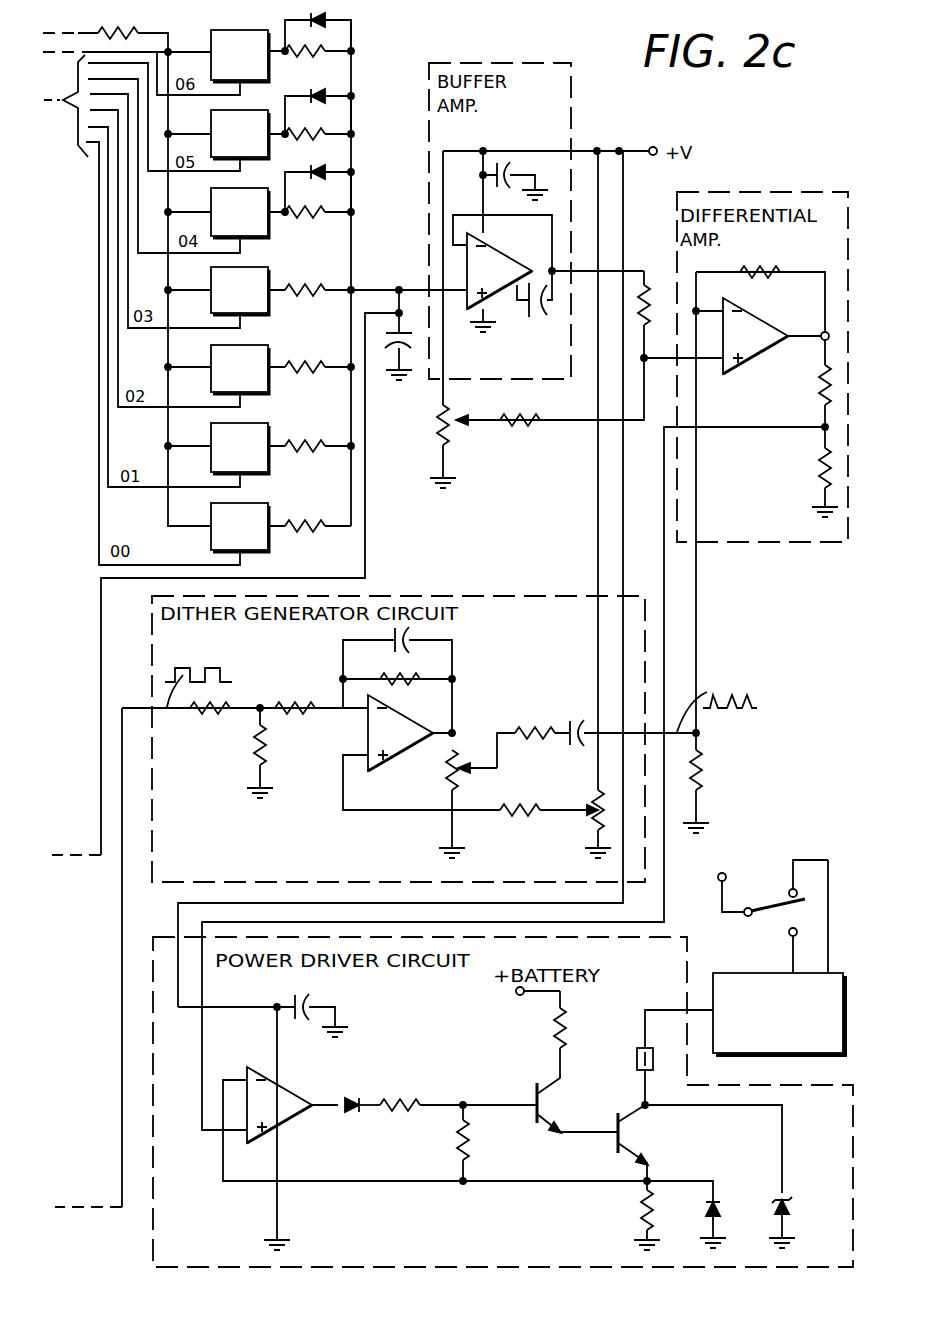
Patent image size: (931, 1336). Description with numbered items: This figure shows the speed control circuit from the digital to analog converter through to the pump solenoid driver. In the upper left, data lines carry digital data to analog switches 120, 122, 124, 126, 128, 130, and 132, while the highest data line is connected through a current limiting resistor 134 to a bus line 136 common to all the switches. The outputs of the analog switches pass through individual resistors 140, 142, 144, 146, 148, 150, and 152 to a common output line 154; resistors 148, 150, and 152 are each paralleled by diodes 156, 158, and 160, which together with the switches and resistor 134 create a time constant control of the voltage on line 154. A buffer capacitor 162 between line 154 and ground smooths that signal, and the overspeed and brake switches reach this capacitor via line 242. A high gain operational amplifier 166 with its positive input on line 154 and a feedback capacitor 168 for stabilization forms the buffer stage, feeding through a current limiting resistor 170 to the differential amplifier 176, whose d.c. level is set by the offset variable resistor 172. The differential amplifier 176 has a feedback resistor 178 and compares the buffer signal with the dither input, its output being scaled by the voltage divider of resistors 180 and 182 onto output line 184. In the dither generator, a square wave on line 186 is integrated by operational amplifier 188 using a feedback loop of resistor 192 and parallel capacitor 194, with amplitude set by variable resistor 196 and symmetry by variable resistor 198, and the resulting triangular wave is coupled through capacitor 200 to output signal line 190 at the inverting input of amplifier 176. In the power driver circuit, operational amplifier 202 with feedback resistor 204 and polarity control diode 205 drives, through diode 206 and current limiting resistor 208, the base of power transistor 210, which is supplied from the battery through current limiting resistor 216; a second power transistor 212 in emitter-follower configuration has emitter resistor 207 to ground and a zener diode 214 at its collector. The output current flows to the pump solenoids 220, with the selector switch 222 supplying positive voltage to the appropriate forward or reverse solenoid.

The analog switch 120 is at (222, 543).
The analog switch 122 is at (222, 463).
The analog switch 124 is at (222, 384).
The analog switch 126 is at (222, 305).
The analog switch 128 is at (222, 227).
The analog switch 130 is at (222, 149).
The analog switch 132 is at (222, 68).
The current limiting resistor 134 is at (100, 31).
The bus line 136 is at (150, 30).
The resistor 140 is at (328, 520).
The resistor 142 is at (328, 440).
The resistor 144 is at (328, 362).
The resistor 146 is at (328, 288).
The resistor 148 is at (327, 216).
The resistor 150 is at (327, 132).
The resistor 152 is at (327, 52).
The common output line 154 is at (380, 278).
The diode 156 is at (327, 166).
The diode 158 is at (320, 93).
The diode 160 is at (333, 19).
The buffer capacitor 162 is at (414, 344).
The operational amplifier 166 is at (497, 270).
The feedback capacitor 168 is at (532, 313).
The current limiting resistor 170 is at (646, 292).
The variable resistor 172 is at (442, 413).
The differential amplifier 176 is at (758, 333).
The feedback resistor 178 is at (748, 264).
The resistor 180 is at (817, 470).
The resistor 182 is at (818, 388).
The output line 184 is at (667, 624).
The line 186 is at (123, 918).
The operational amplifier 188 is at (406, 727).
The output signal line 190 is at (698, 724).
The resistor 192 is at (416, 678).
The capacitor 194 is at (411, 632).
The variable resistor 196 is at (447, 762).
The variable resistor 198 is at (597, 793).
The capacitor 200 is at (580, 713).
The operational amplifier 202 is at (288, 1104).
The feedback resistor 204 is at (458, 1148).
The polarity control diode 205 is at (723, 1211).
The diode 206 is at (352, 1113).
The emitter resistor 207 is at (637, 1215).
The current limiting resistor 208 is at (402, 1098).
The power transistor 210 is at (533, 1097).
The power transistor 212 is at (611, 1143).
The zener diode 214 is at (810, 1193).
The current limiting resistor 216 is at (570, 1014).
The pump solenoids 220 is at (803, 1045).
The selector switch 222 is at (772, 904).
The line 242 is at (372, 551).